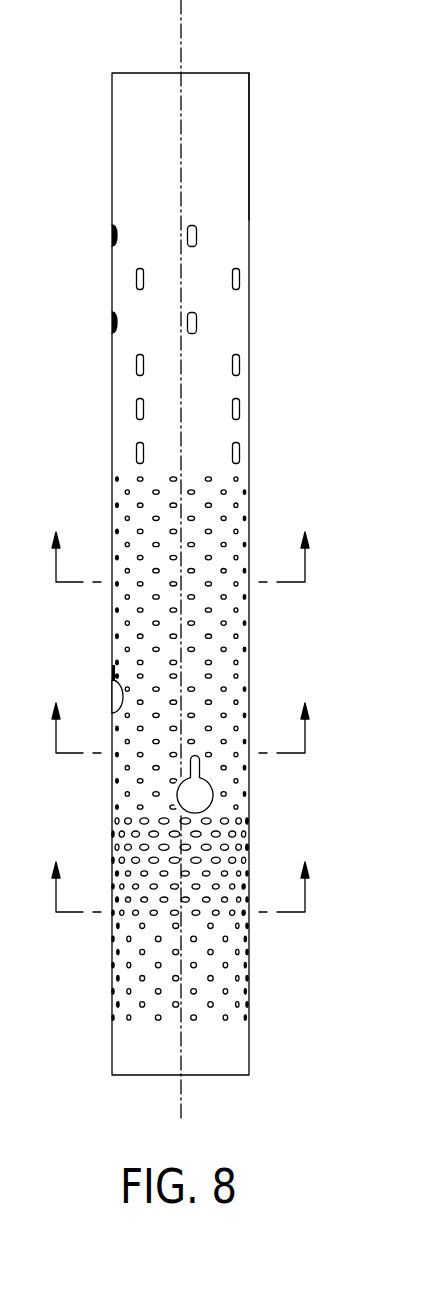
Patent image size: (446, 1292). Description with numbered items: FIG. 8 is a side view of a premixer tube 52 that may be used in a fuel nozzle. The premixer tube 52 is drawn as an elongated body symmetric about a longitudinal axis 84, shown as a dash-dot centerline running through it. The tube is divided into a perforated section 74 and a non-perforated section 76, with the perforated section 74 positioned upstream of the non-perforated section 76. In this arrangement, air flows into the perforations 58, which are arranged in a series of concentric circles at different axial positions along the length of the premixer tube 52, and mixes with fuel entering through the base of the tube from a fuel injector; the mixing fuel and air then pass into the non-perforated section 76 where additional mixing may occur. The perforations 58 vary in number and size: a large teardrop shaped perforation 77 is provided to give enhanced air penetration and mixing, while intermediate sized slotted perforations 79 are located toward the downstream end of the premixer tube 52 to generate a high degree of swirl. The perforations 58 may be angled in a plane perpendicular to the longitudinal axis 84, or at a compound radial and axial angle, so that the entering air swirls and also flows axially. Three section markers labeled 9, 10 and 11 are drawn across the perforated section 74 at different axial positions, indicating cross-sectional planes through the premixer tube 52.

The longitudinal axis 84 is at (181, 33).
The premixer tube 52 is at (223, 1075).
The non-perforated section 76 is at (249, 135).
The slotted perforations 79 is at (240, 278).
The perforated section 74 is at (249, 392).
The perforations 58 is at (223, 492).
The teardrop shaped perforations 77 is at (213, 800).
The section line 9- 9 is at (180, 555).
The section line 10- 10 is at (181, 728).
The section line 11- 11 is at (181, 886).